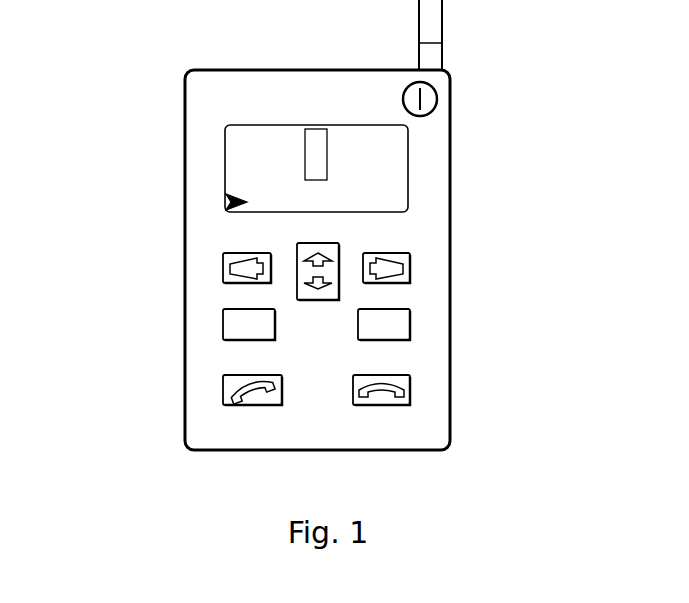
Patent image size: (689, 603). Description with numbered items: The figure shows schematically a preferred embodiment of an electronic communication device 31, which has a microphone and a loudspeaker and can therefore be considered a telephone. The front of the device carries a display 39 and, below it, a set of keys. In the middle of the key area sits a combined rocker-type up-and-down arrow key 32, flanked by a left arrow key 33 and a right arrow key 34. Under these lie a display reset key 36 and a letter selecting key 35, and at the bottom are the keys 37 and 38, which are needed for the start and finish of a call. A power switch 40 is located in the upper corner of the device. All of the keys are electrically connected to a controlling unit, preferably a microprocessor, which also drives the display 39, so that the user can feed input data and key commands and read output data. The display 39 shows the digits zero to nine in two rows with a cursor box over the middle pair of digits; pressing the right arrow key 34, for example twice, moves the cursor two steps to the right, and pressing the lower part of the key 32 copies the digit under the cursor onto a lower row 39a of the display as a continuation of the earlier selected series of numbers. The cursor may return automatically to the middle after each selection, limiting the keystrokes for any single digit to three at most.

The electronic communication device 31 is at (492, 137).
The combined rocker-type up-and-down arrow key 32 is at (332, 250).
The left arrow key 33 is at (223, 280).
The right arrow key 34 is at (410, 281).
The letter selecting key 35 is at (410, 333).
The display reset key 36 is at (223, 333).
The call start key 37 is at (223, 400).
The call finish key 38 is at (410, 399).
The display 39 is at (230, 171).
The lower row of the display 39a is at (226, 202).
The power switch 40 is at (437, 98).